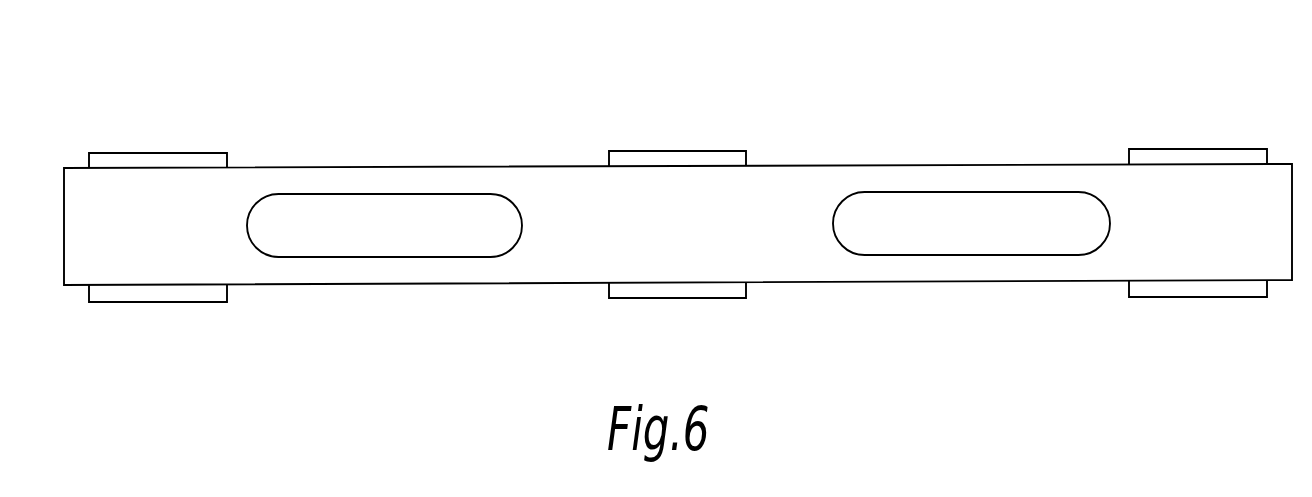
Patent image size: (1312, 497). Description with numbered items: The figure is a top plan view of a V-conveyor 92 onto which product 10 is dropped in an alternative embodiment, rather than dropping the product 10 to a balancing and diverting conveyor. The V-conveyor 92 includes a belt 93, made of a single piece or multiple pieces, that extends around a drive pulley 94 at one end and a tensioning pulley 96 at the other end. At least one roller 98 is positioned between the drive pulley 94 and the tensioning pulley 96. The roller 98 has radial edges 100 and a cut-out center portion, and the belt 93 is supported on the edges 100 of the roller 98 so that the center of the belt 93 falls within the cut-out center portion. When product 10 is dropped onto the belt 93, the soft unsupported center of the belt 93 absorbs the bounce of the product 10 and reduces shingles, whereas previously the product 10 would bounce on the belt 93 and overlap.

The V-conveyor 92 is at (918, 42).
The belt 93 is at (430, 167).
The tensioning pulley 96 is at (127, 153).
The drive pulley 94 is at (1197, 150).
The roller 98 is at (650, 106).
The radial edges 100 is at (727, 151).
The product 10 is at (357, 258).